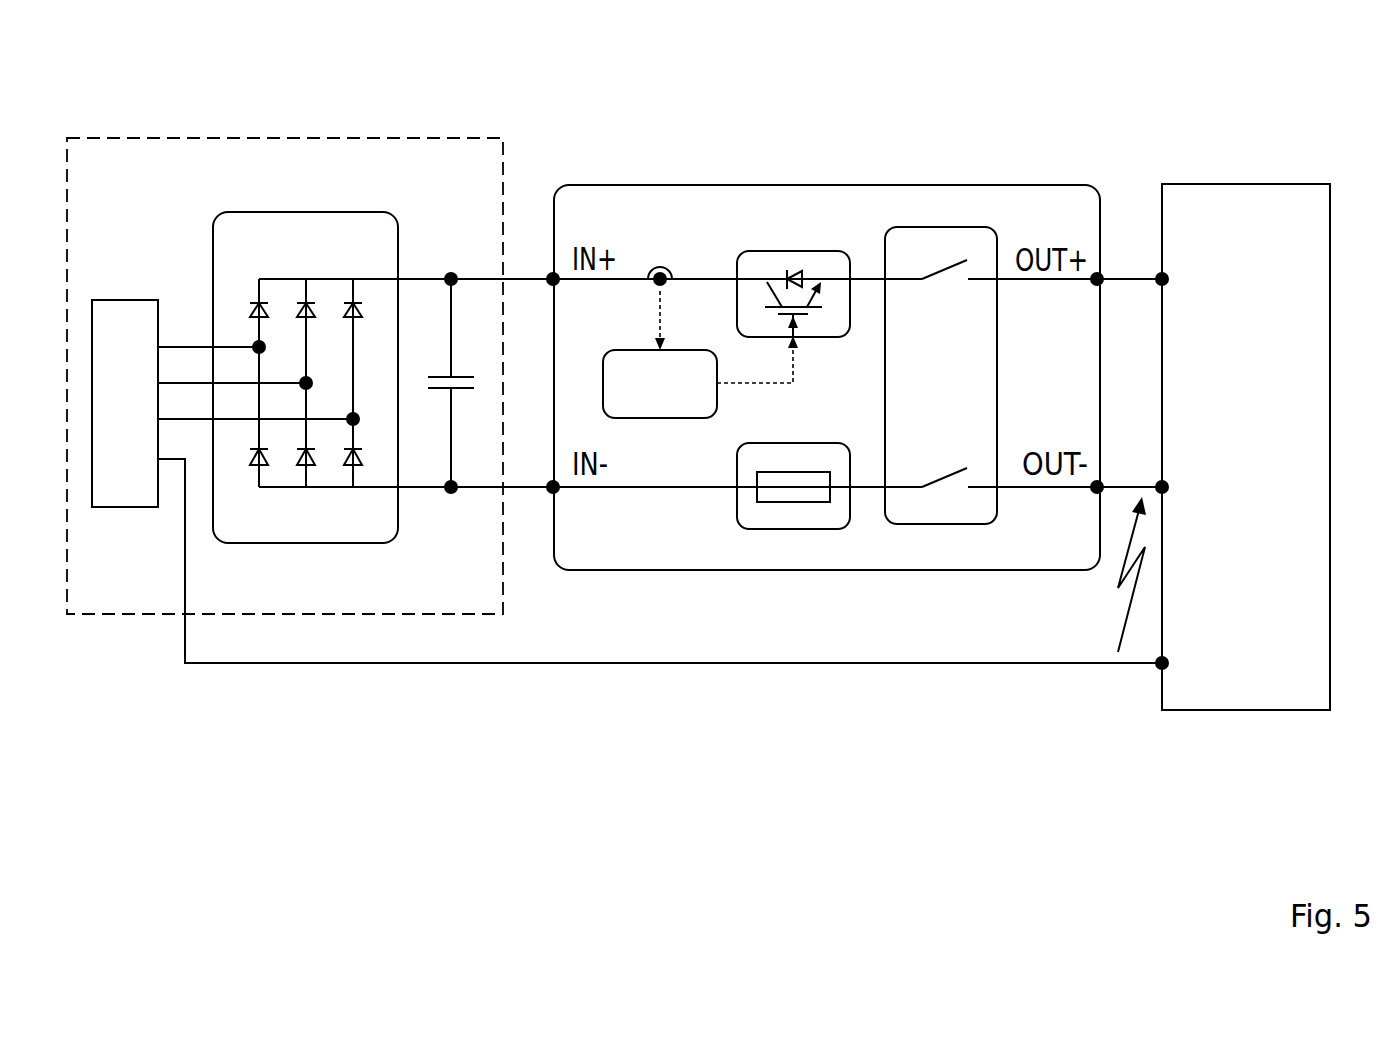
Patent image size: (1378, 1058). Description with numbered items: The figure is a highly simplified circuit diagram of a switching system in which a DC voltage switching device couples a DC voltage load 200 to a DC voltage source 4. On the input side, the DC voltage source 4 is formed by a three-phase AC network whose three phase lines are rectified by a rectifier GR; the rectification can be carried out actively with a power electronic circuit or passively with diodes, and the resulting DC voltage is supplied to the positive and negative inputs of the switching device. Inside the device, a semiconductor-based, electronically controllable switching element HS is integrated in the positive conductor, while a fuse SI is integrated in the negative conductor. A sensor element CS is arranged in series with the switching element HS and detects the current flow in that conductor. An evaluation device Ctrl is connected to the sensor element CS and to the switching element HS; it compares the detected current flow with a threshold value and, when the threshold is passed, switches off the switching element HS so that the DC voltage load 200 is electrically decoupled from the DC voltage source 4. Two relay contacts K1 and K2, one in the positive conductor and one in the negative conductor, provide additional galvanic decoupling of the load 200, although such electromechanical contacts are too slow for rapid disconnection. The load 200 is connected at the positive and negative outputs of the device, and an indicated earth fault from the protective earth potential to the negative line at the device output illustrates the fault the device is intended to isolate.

The DC voltage source 4 is at (444, 174).
The DC voltage load 200 is at (1243, 447).
The rectifier GR is at (305, 357).
The sensor element CS is at (661, 257).
The evaluation device Ctrl is at (660, 384).
The semiconductor-based electronically controllable switching element HS is at (793, 276).
The fuse SI is at (793, 469).
The relay contact K1 is at (936, 258).
The relay contact K2 is at (936, 465).